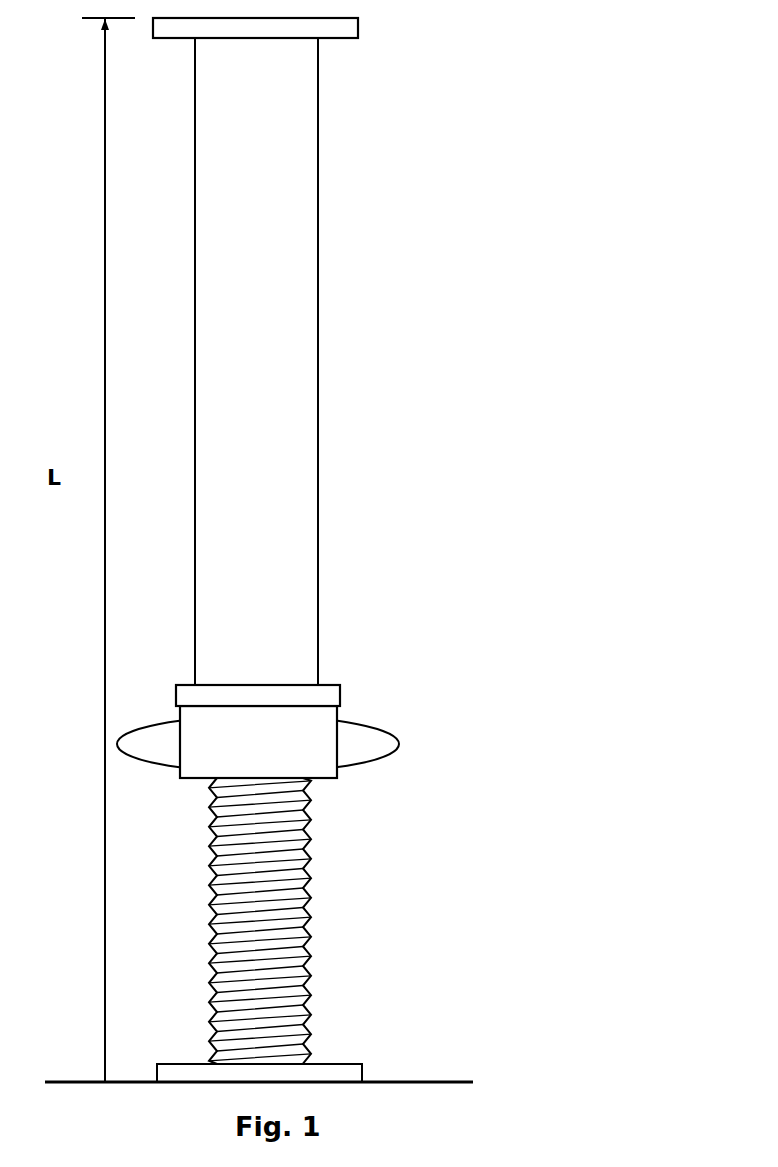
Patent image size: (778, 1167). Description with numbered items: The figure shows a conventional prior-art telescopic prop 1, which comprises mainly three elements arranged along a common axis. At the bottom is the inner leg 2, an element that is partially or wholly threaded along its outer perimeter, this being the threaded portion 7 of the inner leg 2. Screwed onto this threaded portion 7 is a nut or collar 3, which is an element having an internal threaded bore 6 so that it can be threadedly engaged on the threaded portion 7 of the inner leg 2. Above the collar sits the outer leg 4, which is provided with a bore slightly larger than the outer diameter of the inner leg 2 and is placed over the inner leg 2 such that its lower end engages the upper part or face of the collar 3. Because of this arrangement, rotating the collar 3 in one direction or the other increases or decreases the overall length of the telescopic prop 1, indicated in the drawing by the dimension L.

The telescopic prop 1 is at (322, 81).
The inner leg 2 is at (245, 921).
The nut or collar 3 is at (372, 720).
The outer leg 4 is at (322, 471).
The internal threaded bore 6 is at (320, 783).
The threaded portion of the inner leg 7 is at (233, 918).